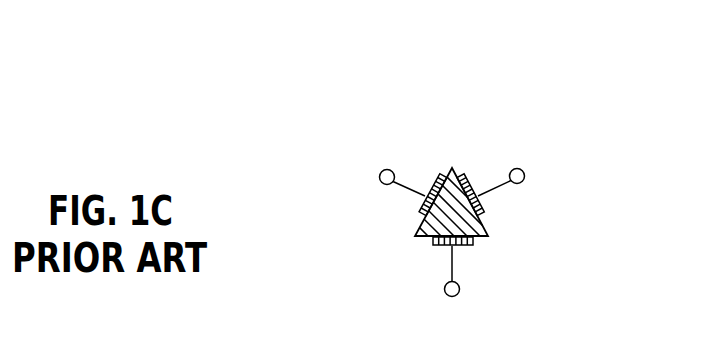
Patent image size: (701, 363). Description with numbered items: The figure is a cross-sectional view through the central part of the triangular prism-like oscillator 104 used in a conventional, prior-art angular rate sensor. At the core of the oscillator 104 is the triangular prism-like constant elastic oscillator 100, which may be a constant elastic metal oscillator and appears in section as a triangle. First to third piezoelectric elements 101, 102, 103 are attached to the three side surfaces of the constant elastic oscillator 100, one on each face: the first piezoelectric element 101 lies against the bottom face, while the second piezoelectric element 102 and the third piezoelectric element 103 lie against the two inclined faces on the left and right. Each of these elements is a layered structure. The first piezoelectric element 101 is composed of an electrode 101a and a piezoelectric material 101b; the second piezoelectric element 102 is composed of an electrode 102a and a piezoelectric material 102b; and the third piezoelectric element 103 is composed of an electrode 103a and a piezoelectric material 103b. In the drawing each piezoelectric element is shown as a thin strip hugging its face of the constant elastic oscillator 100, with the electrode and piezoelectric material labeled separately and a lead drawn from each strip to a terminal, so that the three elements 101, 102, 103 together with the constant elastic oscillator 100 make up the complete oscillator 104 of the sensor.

The constant elastic oscillator 100 is at (419, 239).
The first piezoelectric element 101 is at (518, 266).
The electrode 101a is at (463, 247).
The piezoelectric material 101b is at (474, 238).
The second piezoelectric element 102 is at (346, 200).
The electrode 102a is at (419, 200).
The piezoelectric material 102b is at (416, 214).
The third piezoelectric element 103 is at (557, 200).
The electrode 103a is at (485, 201).
The piezoelectric material 103b is at (488, 214).
The triangular prism-like oscillator 104 is at (357, 132).